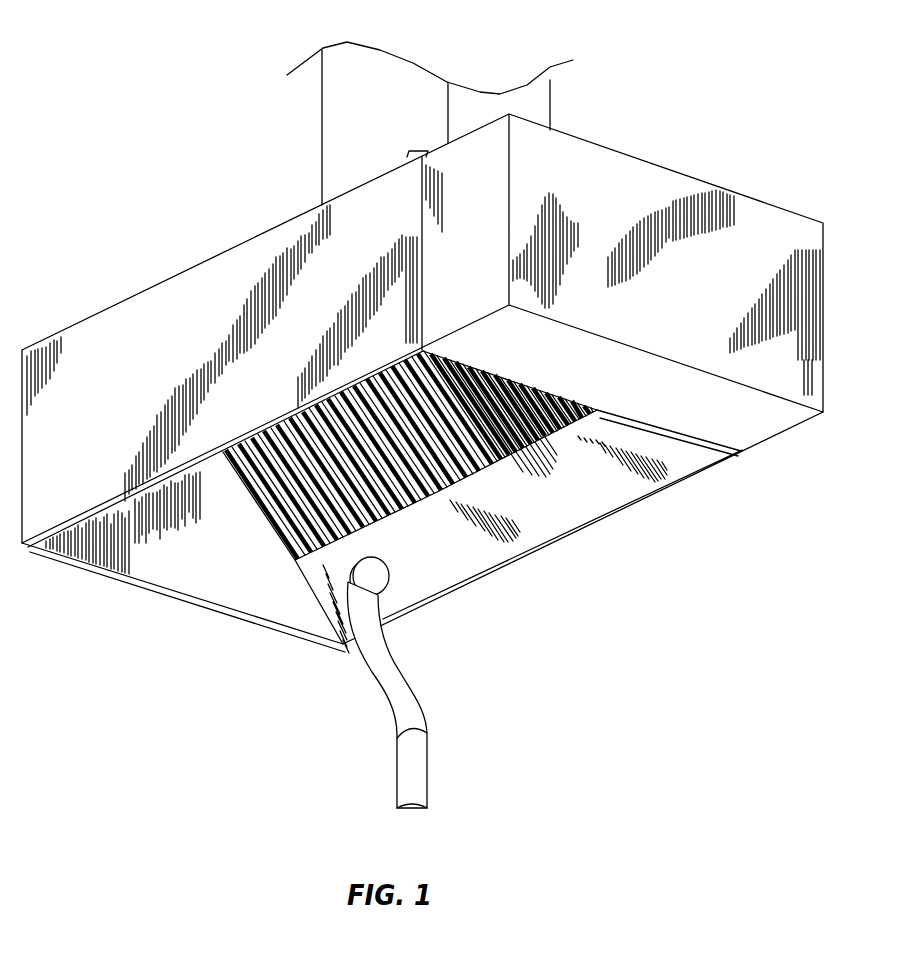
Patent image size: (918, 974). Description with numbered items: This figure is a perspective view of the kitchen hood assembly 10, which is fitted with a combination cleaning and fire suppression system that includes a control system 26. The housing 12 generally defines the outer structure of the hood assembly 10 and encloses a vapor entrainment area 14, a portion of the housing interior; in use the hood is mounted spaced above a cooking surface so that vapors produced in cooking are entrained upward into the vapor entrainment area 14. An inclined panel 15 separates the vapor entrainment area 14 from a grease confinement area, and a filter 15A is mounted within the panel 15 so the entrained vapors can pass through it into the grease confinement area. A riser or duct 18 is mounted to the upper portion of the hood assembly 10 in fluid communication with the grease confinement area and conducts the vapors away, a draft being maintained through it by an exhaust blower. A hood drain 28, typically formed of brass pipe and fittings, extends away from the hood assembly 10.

The kitchen hood assembly 10 is at (170, 121).
The housing 12 is at (163, 351).
The vapor entrainment area 14 is at (192, 553).
The inclined panel 15 is at (567, 503).
The filter 15A is at (430, 462).
The riser or duct 18 is at (350, 143).
The control system 26 is at (660, 152).
The hood drain 28 is at (407, 778).